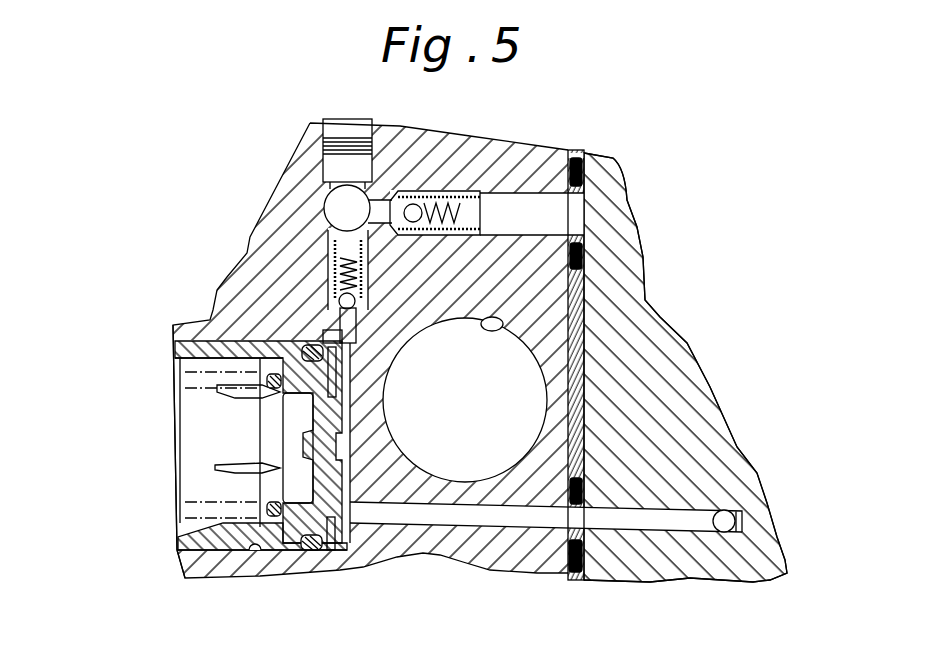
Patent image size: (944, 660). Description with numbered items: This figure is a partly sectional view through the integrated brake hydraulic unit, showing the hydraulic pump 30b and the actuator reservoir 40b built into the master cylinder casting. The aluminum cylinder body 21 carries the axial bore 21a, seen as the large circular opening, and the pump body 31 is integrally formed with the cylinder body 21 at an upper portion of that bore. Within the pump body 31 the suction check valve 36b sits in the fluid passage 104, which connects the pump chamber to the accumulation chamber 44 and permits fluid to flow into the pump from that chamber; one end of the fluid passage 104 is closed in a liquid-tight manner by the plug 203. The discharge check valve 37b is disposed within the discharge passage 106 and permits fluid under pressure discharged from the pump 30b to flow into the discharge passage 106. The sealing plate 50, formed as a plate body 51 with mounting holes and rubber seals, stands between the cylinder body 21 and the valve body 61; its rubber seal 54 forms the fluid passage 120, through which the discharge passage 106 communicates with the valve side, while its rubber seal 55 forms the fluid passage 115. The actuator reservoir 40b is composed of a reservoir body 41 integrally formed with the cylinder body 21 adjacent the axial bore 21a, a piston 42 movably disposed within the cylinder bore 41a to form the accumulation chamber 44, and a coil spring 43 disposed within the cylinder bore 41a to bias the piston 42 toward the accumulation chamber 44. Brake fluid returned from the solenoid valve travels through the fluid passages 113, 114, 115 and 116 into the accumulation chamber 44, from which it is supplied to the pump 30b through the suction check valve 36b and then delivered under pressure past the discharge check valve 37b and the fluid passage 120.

The plug 203 is at (360, 130).
The pump body 31 is at (302, 153).
The hydraulic pump 30b is at (313, 213).
The discharge check valve 37b is at (410, 196).
The discharge passage 106 is at (518, 207).
The sealing plate 50 is at (577, 153).
The rubber seal 54 is at (583, 183).
The fluid passage 120 is at (580, 217).
The axial bore 21a is at (497, 320).
The plate body 51 is at (578, 343).
The cylinder body 21 is at (553, 380).
The rubber seal 55 is at (580, 488).
The valve body 61 is at (732, 490).
The fluid passage 113 is at (737, 525).
The fluid passage 114 is at (643, 530).
The fluid passage 115 is at (553, 527).
The fluid passage 116 is at (437, 520).
The accumulation chamber 44 is at (338, 545).
The reservoir body 41 is at (298, 572).
The cylinder bore 41a is at (257, 554).
The actuator reservoir 40b is at (230, 580).
The piston 42 is at (183, 540).
The coil spring 43 is at (190, 510).
The fluid passage 104 is at (338, 304).
The suction check valve 36b is at (338, 292).